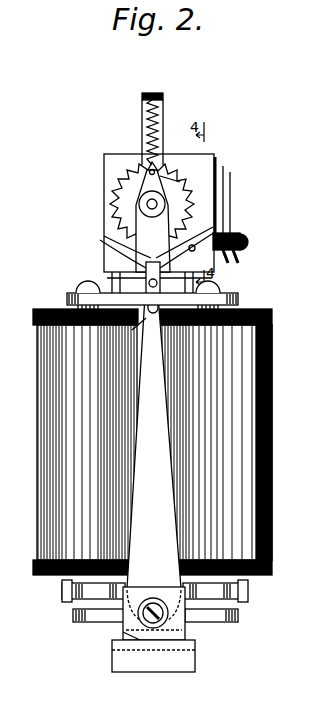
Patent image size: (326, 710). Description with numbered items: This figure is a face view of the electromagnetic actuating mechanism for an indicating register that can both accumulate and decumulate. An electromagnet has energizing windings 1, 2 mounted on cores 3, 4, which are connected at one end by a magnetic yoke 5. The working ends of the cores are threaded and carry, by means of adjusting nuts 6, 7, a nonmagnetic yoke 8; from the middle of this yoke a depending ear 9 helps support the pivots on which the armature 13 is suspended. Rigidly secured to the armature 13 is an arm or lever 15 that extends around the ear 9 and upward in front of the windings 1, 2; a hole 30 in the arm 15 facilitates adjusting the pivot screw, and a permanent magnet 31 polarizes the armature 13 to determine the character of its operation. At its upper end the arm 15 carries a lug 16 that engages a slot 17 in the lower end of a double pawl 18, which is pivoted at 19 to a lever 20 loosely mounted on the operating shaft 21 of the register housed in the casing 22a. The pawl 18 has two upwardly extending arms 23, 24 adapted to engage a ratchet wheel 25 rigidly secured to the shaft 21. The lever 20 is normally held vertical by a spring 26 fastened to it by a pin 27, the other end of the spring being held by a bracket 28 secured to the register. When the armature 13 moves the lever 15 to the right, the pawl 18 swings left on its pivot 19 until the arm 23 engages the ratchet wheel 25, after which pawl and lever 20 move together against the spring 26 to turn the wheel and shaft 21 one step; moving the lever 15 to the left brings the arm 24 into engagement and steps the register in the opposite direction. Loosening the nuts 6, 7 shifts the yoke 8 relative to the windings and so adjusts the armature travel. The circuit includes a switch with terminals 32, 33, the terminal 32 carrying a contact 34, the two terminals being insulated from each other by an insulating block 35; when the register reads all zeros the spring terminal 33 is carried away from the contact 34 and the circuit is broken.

The energizing winding 1 is at (40, 480).
The energizing winding 2 is at (268, 488).
The core 3 is at (68, 306).
The core 4 is at (240, 306).
The magnetic yoke 5 is at (236, 298).
The adjusting nut 6 is at (64, 592).
The adjusting nut 7 is at (248, 586).
The nonmagnetic yoke 8 is at (76, 600).
The depending ear 9 is at (140, 624).
The armature 13 is at (232, 622).
The arm or lever 15 is at (154, 442).
The lug 16 is at (148, 296).
The slot 17 is at (132, 330).
The double pawl 18 is at (146, 287).
The pivot 19 is at (240, 258).
The lever 20 is at (150, 228).
The operating shaft 21 is at (150, 202).
The casing 22a is at (117, 154).
The arm 23 is at (222, 240).
The arm 24 is at (110, 246).
The ratchet wheel 25 is at (178, 180).
The spring 26 is at (164, 105).
The pin 27 is at (160, 166).
The bracket 28 is at (142, 96).
The hole 30 is at (153, 628).
The permanent magnet 31 is at (190, 670).
The terminal 32 is at (232, 207).
The terminal 33 is at (226, 189).
The contact 34 is at (222, 168).
The insulating block 35 is at (248, 250).